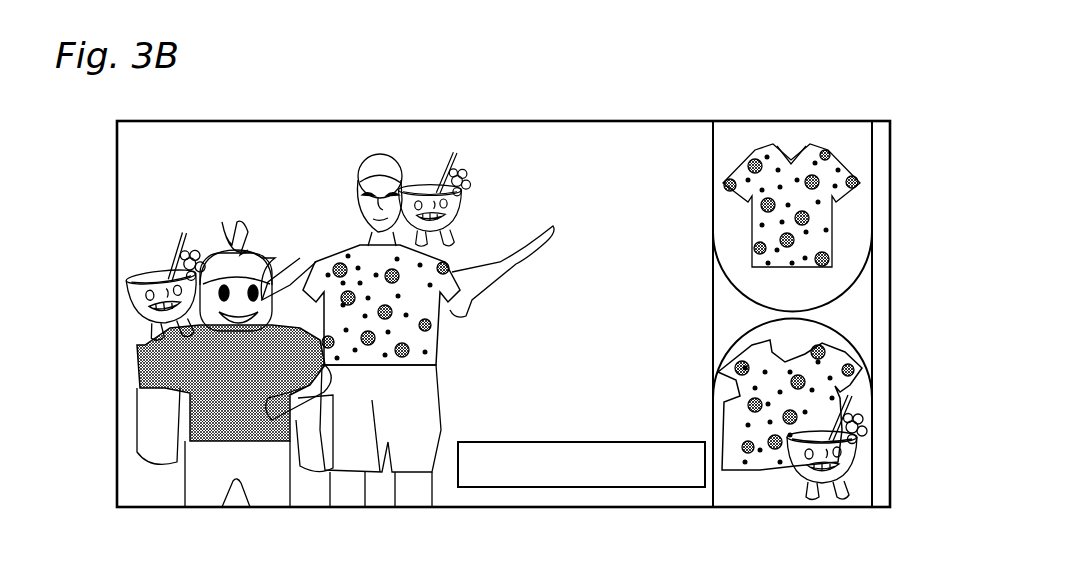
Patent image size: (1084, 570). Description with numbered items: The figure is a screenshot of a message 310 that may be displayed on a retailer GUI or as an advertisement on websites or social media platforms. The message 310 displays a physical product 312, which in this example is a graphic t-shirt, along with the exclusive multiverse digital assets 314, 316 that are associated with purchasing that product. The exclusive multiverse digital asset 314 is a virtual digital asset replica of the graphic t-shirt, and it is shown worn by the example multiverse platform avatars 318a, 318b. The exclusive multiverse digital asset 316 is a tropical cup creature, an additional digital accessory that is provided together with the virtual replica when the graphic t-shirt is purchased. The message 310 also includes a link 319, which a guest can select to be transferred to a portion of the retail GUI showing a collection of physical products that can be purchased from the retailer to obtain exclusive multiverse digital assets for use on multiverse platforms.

The message 310 is at (750, 79).
The physical product 312 is at (848, 178).
The exclusive multiverse digital asset 314 is at (195, 490).
The exclusive multiverse digital asset 316 is at (150, 272).
The multiverse platform avatar 318a is at (160, 450).
The multiverse platform avatar 318b is at (382, 170).
The link 319 is at (615, 478).